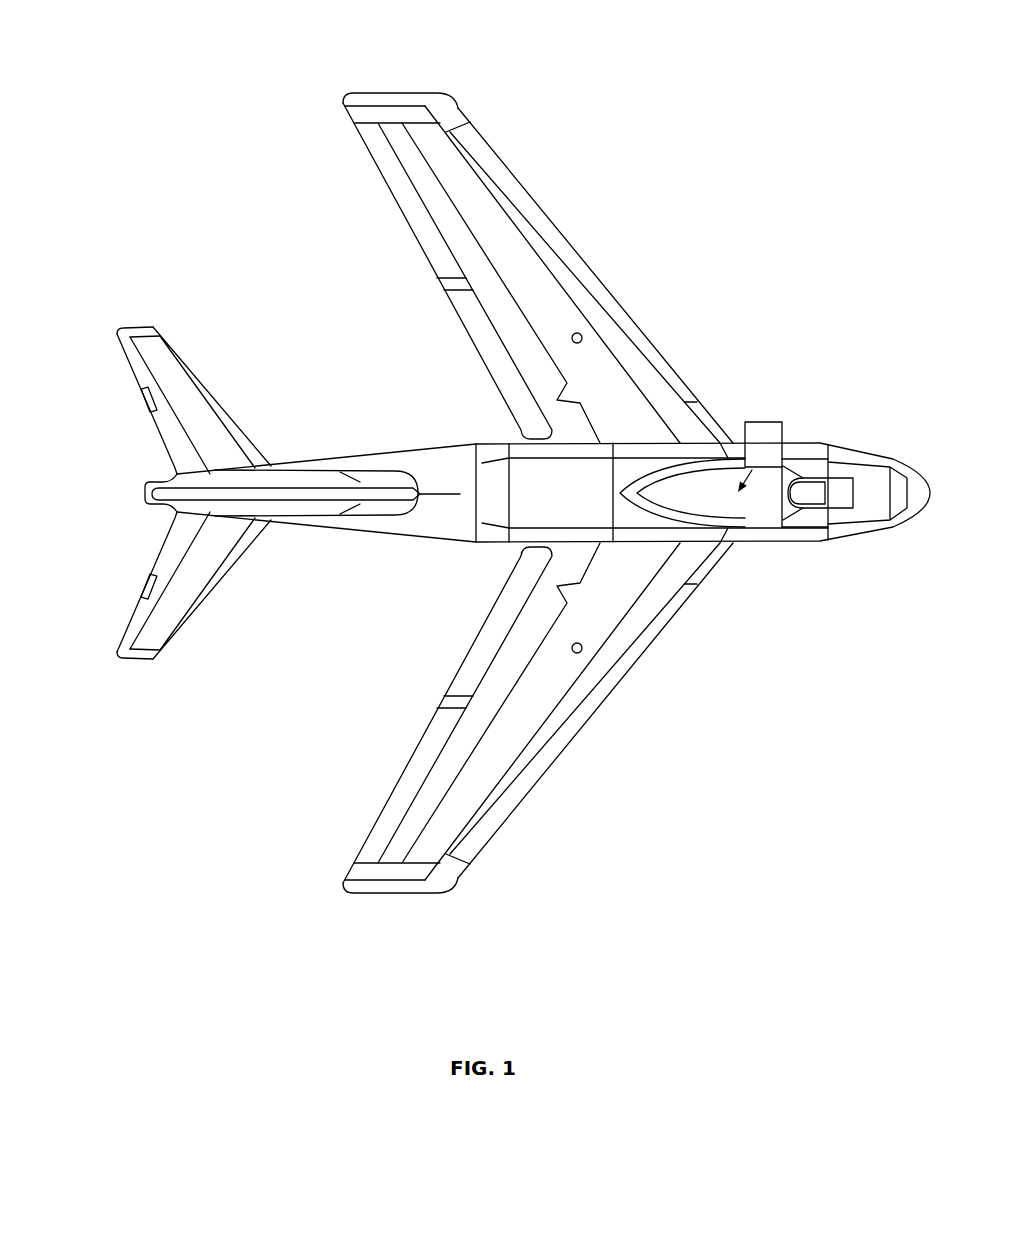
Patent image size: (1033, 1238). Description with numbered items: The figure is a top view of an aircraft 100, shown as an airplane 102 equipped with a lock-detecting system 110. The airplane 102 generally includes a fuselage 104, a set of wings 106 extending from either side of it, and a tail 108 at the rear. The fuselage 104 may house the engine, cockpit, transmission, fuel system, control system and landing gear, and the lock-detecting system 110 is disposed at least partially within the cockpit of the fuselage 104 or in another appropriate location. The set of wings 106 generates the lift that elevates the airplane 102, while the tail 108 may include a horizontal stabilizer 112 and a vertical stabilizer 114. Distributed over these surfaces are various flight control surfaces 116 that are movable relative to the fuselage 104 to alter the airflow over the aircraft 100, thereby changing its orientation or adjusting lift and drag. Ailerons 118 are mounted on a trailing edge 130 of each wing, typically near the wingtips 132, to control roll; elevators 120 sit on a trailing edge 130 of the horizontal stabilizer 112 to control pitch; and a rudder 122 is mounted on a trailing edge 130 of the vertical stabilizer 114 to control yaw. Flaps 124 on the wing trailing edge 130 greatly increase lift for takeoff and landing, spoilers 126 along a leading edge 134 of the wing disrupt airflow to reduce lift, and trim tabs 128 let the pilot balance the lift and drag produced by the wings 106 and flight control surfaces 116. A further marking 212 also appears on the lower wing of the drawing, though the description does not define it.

The aircraft 100 is at (768, 73).
The airplane 102 is at (766, 253).
The fuselage 104 is at (440, 532).
The set of wings 106 is at (468, 183).
The tail 108 is at (266, 384).
The lock-detecting system 110 is at (762, 422).
The horizontal stabilizer 112 is at (172, 378).
The vertical stabilizer 114 is at (305, 488).
The flight control surfaces 116 is at (378, 213).
The ailerons 118 is at (378, 152).
The elevators 120 is at (142, 380).
The rudder 122 is at (250, 502).
The flaps 124 is at (495, 357).
The spoilers 126 is at (598, 288).
The trim tabs 128 is at (148, 402).
The trailing edge 130 is at (363, 270).
The wingtips 132 is at (369, 81).
The leading edge 134 is at (615, 226).
The wing spar 212 is at (493, 790).